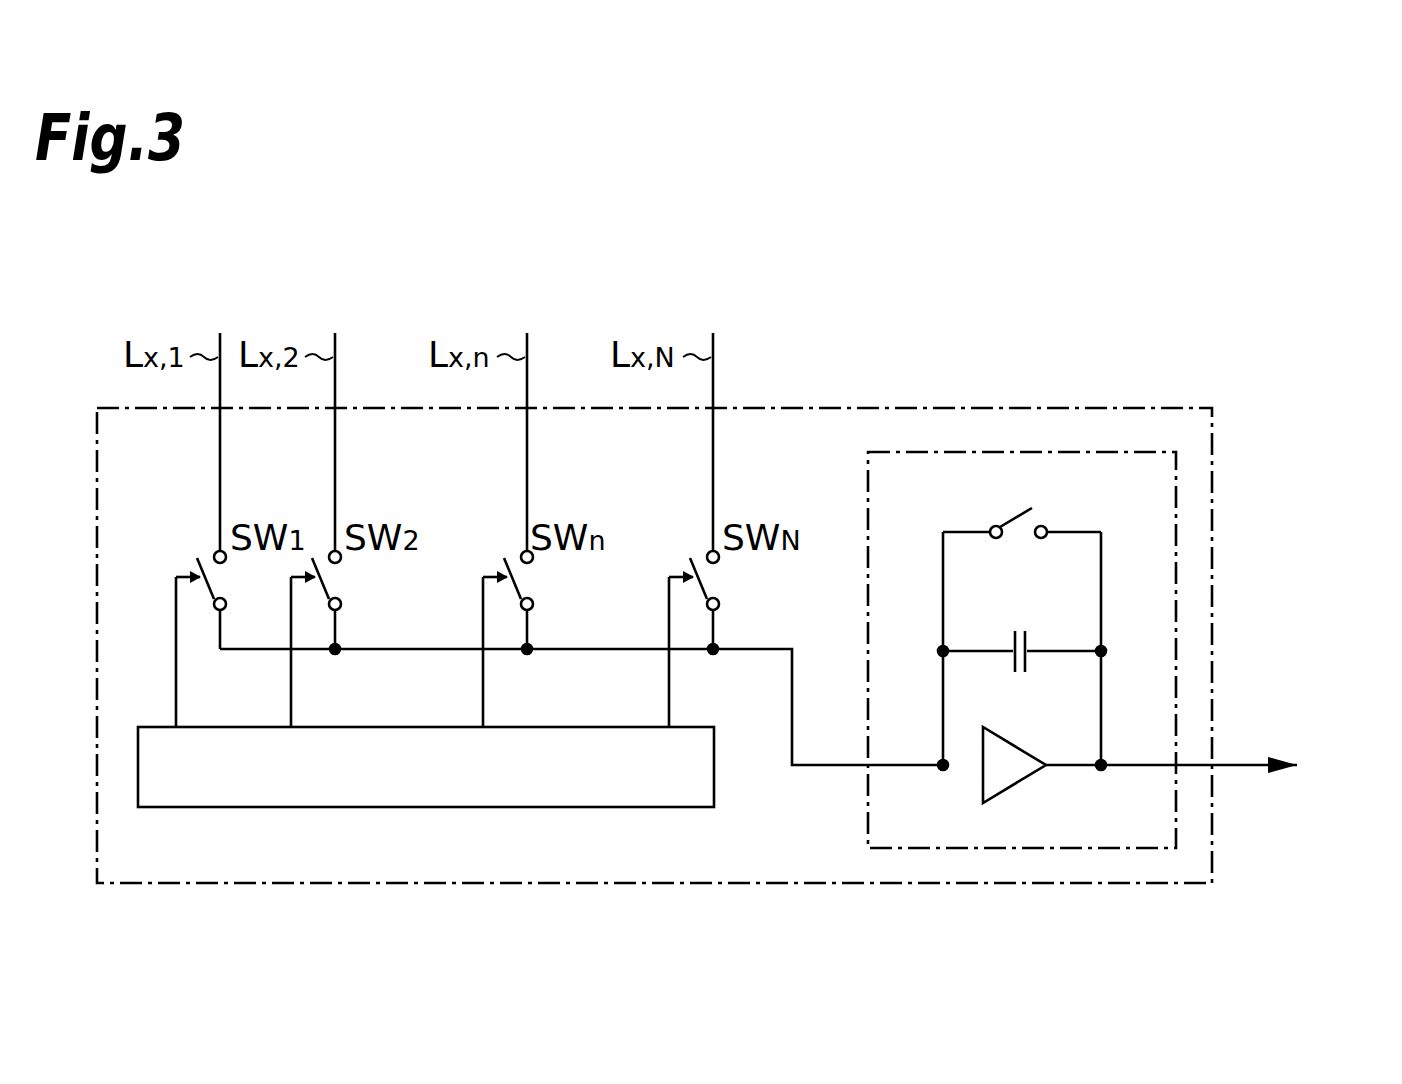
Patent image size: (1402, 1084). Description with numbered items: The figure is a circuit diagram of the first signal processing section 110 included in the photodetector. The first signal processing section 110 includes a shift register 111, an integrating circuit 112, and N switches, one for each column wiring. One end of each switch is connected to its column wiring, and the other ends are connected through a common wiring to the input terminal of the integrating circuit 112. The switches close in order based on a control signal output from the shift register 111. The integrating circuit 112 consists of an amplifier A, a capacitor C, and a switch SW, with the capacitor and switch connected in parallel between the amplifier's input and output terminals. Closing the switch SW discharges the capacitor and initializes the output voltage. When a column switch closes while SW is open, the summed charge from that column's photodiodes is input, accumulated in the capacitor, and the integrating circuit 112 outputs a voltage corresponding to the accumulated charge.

The first signal processing section 110 is at (808, 407).
The shift register 111 is at (483, 808).
The integrating circuit 112 is at (862, 811).